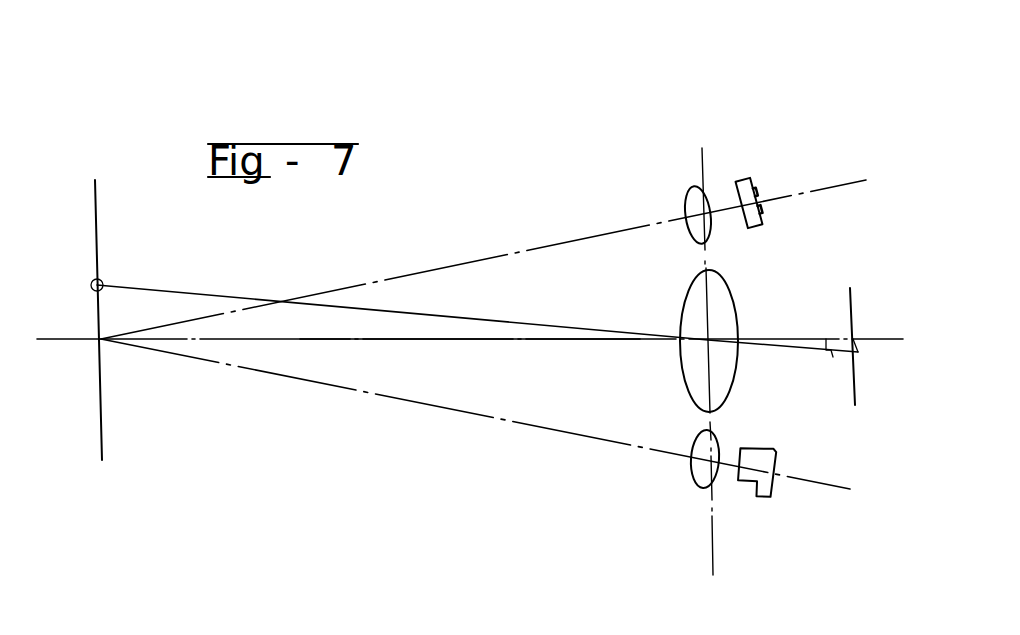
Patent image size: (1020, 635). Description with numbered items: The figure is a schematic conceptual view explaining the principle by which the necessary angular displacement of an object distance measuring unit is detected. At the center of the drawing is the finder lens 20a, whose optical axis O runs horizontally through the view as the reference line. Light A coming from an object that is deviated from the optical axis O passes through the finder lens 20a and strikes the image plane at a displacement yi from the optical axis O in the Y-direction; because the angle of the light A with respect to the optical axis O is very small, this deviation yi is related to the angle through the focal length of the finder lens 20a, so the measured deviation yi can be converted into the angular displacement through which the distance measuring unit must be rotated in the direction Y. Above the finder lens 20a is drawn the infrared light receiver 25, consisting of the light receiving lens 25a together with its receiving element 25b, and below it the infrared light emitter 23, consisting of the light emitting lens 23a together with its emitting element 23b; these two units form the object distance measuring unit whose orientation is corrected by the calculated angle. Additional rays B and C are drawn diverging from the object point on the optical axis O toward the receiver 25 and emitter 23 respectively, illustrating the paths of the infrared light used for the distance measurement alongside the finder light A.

The finder lens 20a is at (733, 310).
The infrared light emitter 23 is at (705, 519).
The light emitting lens 23a is at (693, 472).
The light receiving element 23b is at (759, 504).
The infrared light receiver 25 is at (766, 144).
The light receiving lens 25a is at (706, 178).
The light emitting element 25b is at (752, 178).
The light incident upon object A is at (238, 297).
The ray B is at (481, 260).
The ray C is at (408, 400).
The optical axis O is at (462, 342).
The deviation on image plane in Y-direction yi is at (858, 352).